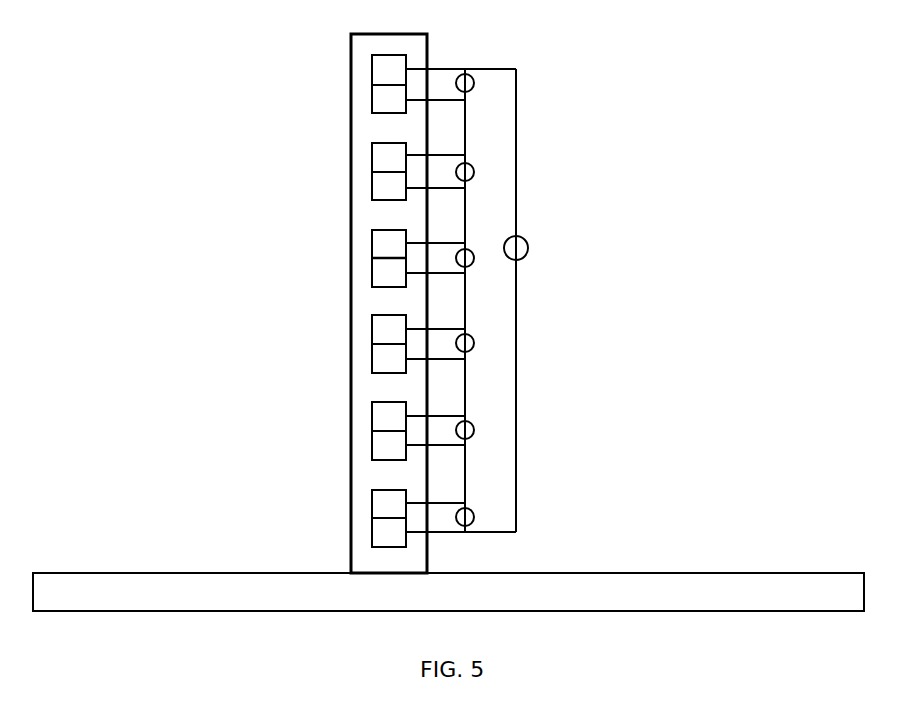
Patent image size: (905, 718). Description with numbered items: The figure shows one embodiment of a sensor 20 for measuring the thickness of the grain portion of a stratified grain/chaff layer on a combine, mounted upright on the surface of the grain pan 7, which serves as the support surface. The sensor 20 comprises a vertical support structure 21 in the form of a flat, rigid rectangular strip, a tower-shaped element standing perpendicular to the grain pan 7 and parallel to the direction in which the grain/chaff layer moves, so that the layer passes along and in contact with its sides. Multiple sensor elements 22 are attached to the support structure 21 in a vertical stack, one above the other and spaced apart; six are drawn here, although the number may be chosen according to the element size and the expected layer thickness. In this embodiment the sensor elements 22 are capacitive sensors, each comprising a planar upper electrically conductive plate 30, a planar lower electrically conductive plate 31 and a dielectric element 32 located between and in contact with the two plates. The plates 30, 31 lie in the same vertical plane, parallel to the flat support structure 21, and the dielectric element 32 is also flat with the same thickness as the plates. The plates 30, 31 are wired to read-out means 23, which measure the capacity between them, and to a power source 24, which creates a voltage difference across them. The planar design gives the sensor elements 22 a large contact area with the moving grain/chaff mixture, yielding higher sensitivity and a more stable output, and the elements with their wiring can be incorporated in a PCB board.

The grain pan 7 is at (66, 592).
The sensor 20 is at (427, 303).
The support structure 21 is at (361, 44).
The sensor elements 22 is at (386, 226).
The read-out means 23 is at (463, 173).
The power source 24 is at (522, 248).
The upper electrically conductive plate 30 is at (354, 265).
The lower electrically conductive plate 31 is at (388, 277).
The dielectric element 32 is at (378, 258).